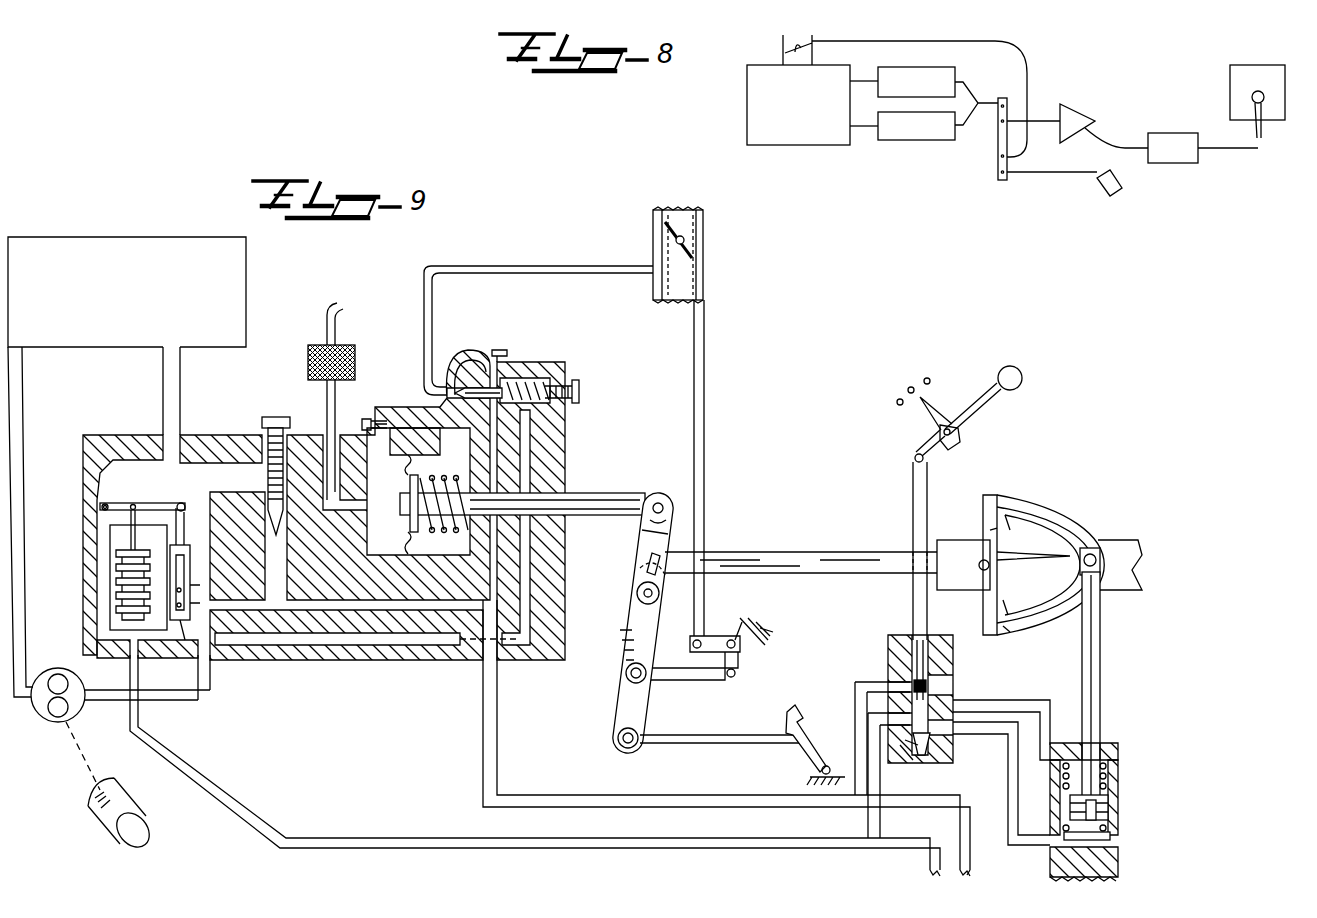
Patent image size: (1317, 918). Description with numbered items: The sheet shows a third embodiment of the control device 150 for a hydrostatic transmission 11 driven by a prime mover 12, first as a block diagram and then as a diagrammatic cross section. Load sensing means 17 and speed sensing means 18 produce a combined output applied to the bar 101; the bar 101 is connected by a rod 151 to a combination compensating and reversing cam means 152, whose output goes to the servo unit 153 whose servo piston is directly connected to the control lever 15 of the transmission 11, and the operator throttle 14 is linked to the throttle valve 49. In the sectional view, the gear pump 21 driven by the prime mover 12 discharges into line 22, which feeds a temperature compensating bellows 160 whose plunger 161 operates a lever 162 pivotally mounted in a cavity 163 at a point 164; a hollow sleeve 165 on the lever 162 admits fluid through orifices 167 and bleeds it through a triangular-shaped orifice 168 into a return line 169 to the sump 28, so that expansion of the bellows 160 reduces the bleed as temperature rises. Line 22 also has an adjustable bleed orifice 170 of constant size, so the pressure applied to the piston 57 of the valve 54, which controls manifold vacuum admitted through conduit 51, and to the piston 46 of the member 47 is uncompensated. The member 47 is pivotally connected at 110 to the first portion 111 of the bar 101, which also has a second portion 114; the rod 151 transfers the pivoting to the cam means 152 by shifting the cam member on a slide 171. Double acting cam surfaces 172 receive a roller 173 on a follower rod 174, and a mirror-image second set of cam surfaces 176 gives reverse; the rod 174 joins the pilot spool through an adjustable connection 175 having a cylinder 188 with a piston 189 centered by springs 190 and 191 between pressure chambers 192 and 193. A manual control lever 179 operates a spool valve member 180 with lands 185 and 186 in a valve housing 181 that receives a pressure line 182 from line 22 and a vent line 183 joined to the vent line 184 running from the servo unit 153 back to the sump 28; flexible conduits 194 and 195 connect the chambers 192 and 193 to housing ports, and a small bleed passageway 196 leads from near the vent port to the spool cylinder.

In FIG. 8, the hydrostatic transmission 11 is at (1230, 90).
In FIG. 8, the prime mover 12 is at (799, 111).
In FIG. 9, the prime mover 12 is at (94, 812).
In FIG. 8, the throttle 14 is at (1106, 196).
In FIG. 9, the throttle 14 is at (799, 714).
In FIG. 8, the control lever 15 is at (1263, 140).
In FIG. 8, the load sensing means 17 is at (923, 95).
In FIG. 8, the speed sensing means 18 is at (923, 139).
In FIG. 9, the gear pump 21 is at (42, 715).
In FIG. 9, the line 22 is at (190, 700).
In FIG. 9, the sump 28 is at (128, 299).
In FIG. 9, the piston 46 is at (448, 540).
In FIG. 9, the member 47 is at (596, 495).
In FIG. 9, the throttle valve 49 is at (670, 215).
In FIG. 9, the conduit 51 is at (522, 268).
In FIG. 9, the valve 54 is at (489, 355).
In FIG. 9, the piston 57 is at (522, 377).
In FIG. 8, the bar 101 is at (992, 150).
In FIG. 9, the bar 101 is at (630, 638).
In FIG. 9, the pivotal connection 110 is at (662, 498).
In FIG. 9, the first portion 111 is at (640, 537).
In FIG. 9, the second portion 114 is at (614, 712).
In FIG. 9, the control device 150 is at (301, 303).
In FIG. 8, the rod 151 is at (1045, 112).
In FIG. 9, the rod 151 is at (772, 550).
In FIG. 8, the compensating and reversing cam means 152 is at (1088, 118).
In FIG. 9, the compensating and reversing cam means 152 is at (1090, 503).
In FIG. 8, the servo unit 153 is at (1170, 164).
In FIG. 9, the bellows 160 is at (122, 588).
In FIG. 9, the plunger 161 is at (131, 536).
In FIG. 9, the lever 162 is at (162, 492).
In FIG. 9, the cavity 163 is at (132, 460).
In FIG. 9, the pivot point 164 is at (103, 505).
In FIG. 9, the hollow sleeve 165 is at (181, 645).
In FIG. 9, the orifices 167 is at (192, 606).
In FIG. 9, the triangular-shaped orifice 168 is at (192, 566).
In FIG. 9, the return line 169 is at (212, 537).
In FIG. 9, the adjustable bleed orifice / cam member 170 is at (284, 540).
In FIG. 9, the slide 171 is at (985, 555).
In FIG. 9, the cam surfaces 172 is at (1027, 630).
In FIG. 9, the roller 173 is at (1098, 550).
In FIG. 8, the follower rod 174 is at (1127, 143).
In FIG. 9, the follower rod 174 is at (1101, 678).
In FIG. 9, the adjustable connection 175 is at (1119, 752).
In FIG. 9, the second cam surfaces 176 is at (1040, 517).
In FIG. 9, the manual control lever 179 is at (1022, 378).
In FIG. 9, the valve member 180 is at (936, 634).
In FIG. 9, the valve housing 181 is at (898, 637).
In FIG. 9, the pressure line 182 is at (866, 683).
In FIG. 9, the vent line 183 is at (866, 818).
In FIG. 9, the vent line 184 is at (198, 772).
In FIG. 9, the spool land 185 is at (930, 690).
In FIG. 9, the spool land 186 is at (930, 742).
In FIG. 9, the cylinder 188 is at (1062, 822).
In FIG. 9, the piston 189 is at (1110, 803).
In FIG. 9, the spring 190 is at (1119, 790).
In FIG. 9, the spring 191 is at (1119, 852).
In FIG. 9, the pressure chamber 192 is at (1119, 771).
In FIG. 9, the pressure chamber 193 is at (1119, 826).
In FIG. 9, the flexible conduit 194 is at (1042, 745).
In FIG. 9, the flexible conduit 195 is at (1018, 846).
In FIG. 9, the bleed passageway 196 is at (903, 762).